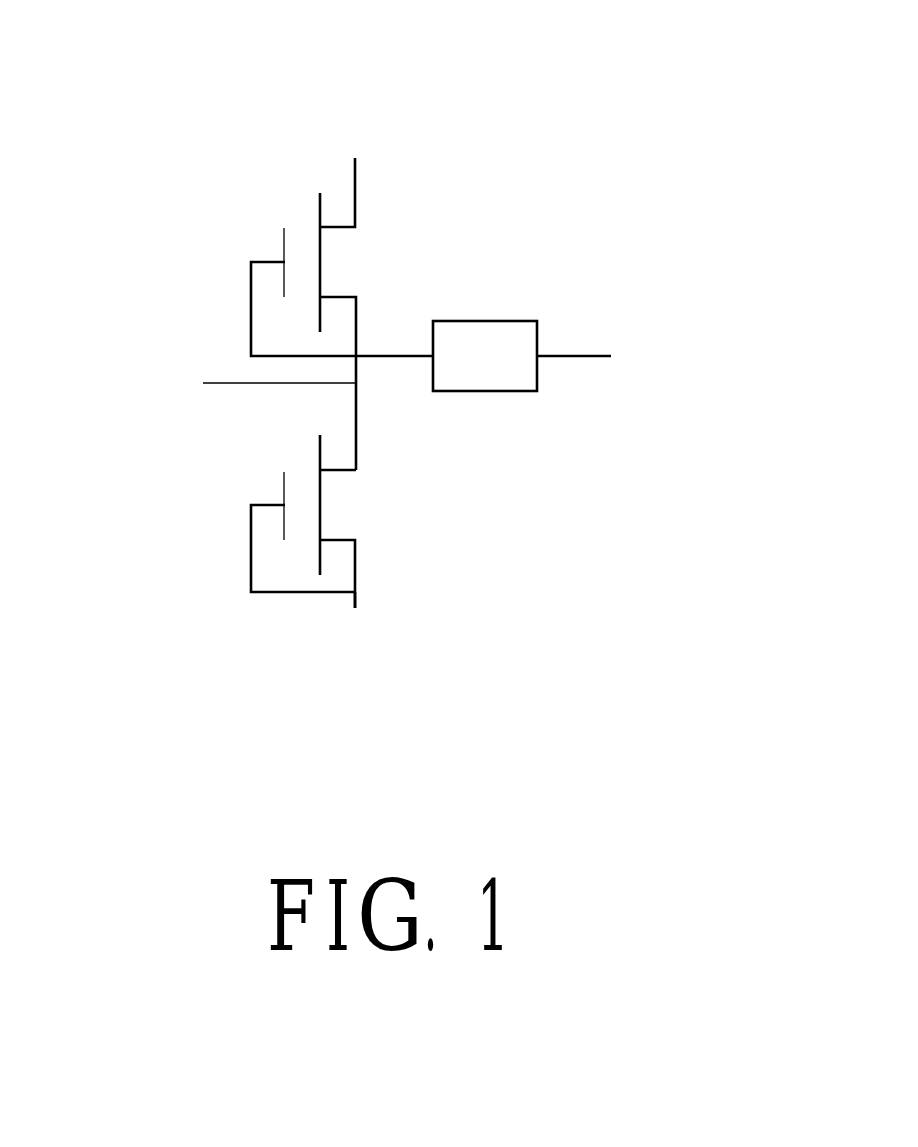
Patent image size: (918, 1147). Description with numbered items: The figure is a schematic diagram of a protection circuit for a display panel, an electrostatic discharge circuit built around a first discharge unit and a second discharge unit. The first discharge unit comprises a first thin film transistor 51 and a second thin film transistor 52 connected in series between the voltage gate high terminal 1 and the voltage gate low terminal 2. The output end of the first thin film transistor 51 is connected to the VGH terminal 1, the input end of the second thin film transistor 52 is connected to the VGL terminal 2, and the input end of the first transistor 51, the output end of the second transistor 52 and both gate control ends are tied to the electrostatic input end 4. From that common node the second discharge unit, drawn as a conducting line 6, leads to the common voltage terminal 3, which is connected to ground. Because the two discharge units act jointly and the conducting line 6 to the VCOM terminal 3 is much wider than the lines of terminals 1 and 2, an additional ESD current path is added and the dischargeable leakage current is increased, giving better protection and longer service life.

The first power supply terminal 1 is at (355, 160).
The second power supply terminal 2 is at (355, 608).
The output terminal 3 is at (605, 353).
The input terminal 4 is at (203, 383).
The first transistor 51 is at (298, 256).
The second transistor 52 is at (302, 513).
The resistor / load element 6 is at (467, 337).